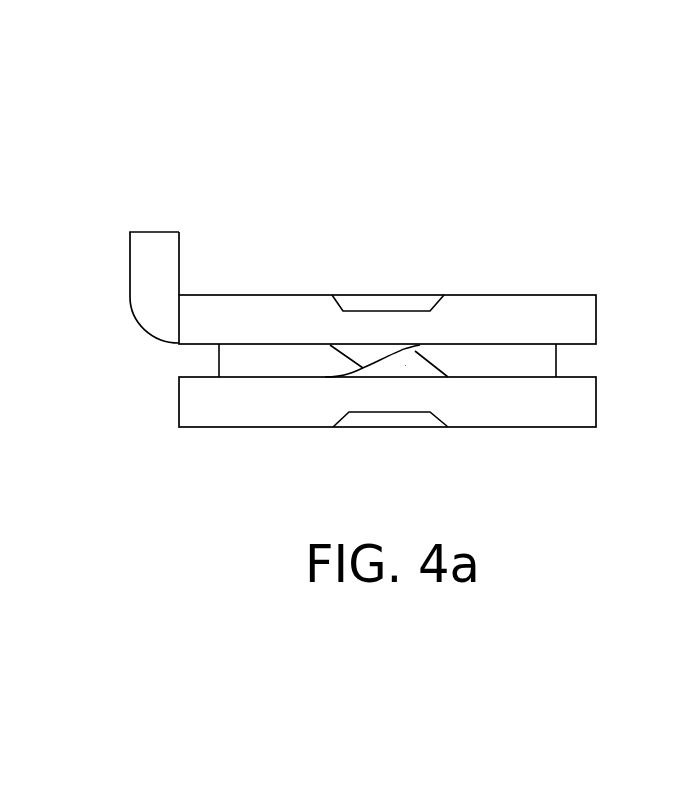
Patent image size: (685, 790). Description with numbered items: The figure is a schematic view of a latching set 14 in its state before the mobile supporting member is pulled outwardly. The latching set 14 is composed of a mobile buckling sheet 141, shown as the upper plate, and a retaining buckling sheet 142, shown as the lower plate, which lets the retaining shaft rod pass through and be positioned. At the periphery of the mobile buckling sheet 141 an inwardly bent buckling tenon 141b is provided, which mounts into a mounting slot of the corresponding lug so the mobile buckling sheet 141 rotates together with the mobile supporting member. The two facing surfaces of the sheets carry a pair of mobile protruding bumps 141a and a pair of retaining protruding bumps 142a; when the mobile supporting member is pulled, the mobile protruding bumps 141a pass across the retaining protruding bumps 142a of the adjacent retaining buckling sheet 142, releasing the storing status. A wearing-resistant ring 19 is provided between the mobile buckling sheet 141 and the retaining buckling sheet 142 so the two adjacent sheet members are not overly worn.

The latching set 14 is at (453, 240).
The mobile buckling sheet 141 is at (288, 320).
The mobile protruding bump 141a is at (365, 355).
The buckling tenon 141b is at (158, 255).
The retaining buckling sheet 142 is at (508, 412).
The retaining protruding bump 142a is at (405, 365).
The wearing-resistant ring 19 is at (238, 358).